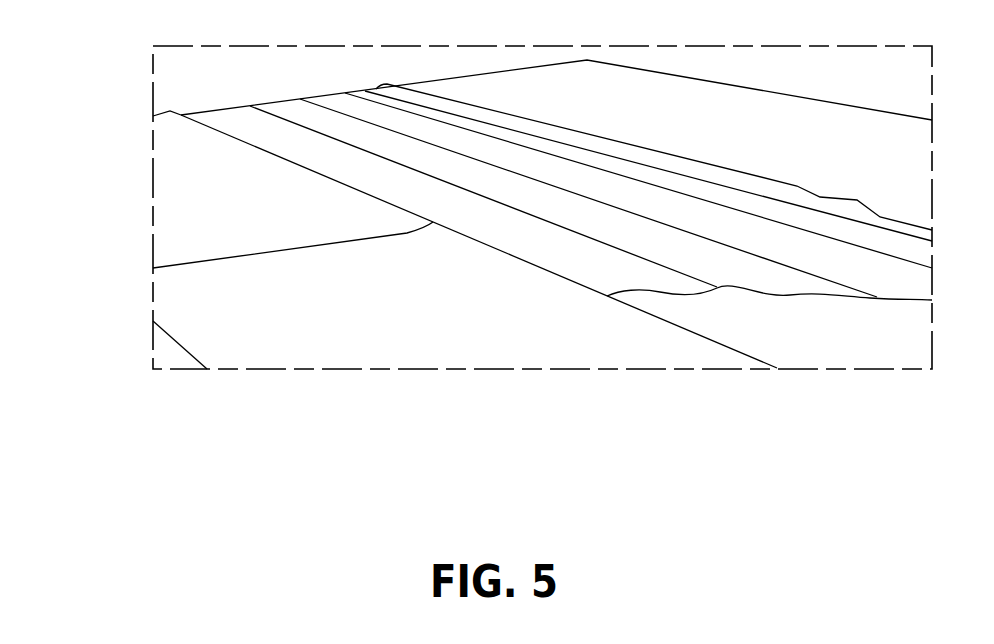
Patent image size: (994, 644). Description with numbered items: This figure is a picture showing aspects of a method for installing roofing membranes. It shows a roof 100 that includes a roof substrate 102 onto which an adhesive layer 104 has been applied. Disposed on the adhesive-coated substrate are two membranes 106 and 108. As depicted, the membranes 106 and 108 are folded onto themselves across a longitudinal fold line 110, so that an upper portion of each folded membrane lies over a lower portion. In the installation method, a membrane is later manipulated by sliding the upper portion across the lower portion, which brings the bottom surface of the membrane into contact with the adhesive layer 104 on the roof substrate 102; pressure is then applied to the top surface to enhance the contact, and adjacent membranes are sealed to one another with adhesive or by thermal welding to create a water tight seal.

The roof 100 is at (199, 100).
The roof substrate 102 is at (787, 283).
The adhesive layer 104 is at (733, 313).
The membrane 106 is at (227, 317).
The membrane 108 is at (188, 200).
The longitudinal fold line 110 is at (520, 256).